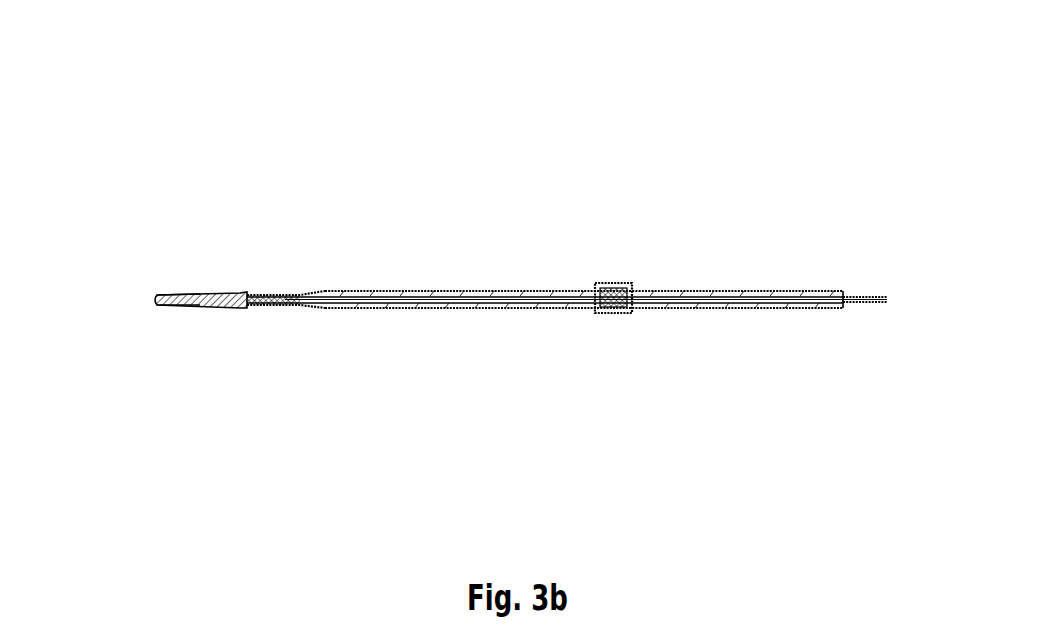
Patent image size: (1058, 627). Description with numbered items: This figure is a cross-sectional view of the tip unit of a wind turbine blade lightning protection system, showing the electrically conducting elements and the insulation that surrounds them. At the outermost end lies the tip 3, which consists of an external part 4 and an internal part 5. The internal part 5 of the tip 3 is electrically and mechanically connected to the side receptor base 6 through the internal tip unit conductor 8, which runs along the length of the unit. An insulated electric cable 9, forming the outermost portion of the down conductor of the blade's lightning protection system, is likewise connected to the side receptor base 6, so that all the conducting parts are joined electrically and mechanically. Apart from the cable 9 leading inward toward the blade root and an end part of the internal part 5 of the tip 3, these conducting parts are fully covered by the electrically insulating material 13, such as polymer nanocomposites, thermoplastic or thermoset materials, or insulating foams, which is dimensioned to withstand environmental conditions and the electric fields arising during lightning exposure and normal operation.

The tip 3 is at (227, 308).
The external part of the tip 4 is at (200, 297).
The internal part of the tip 5 is at (277, 297).
The internal tip unit conductor 8 is at (457, 293).
The side receptor base 6 is at (623, 288).
The insulating material 13 is at (803, 290).
The insulated electric cable 9 is at (685, 298).